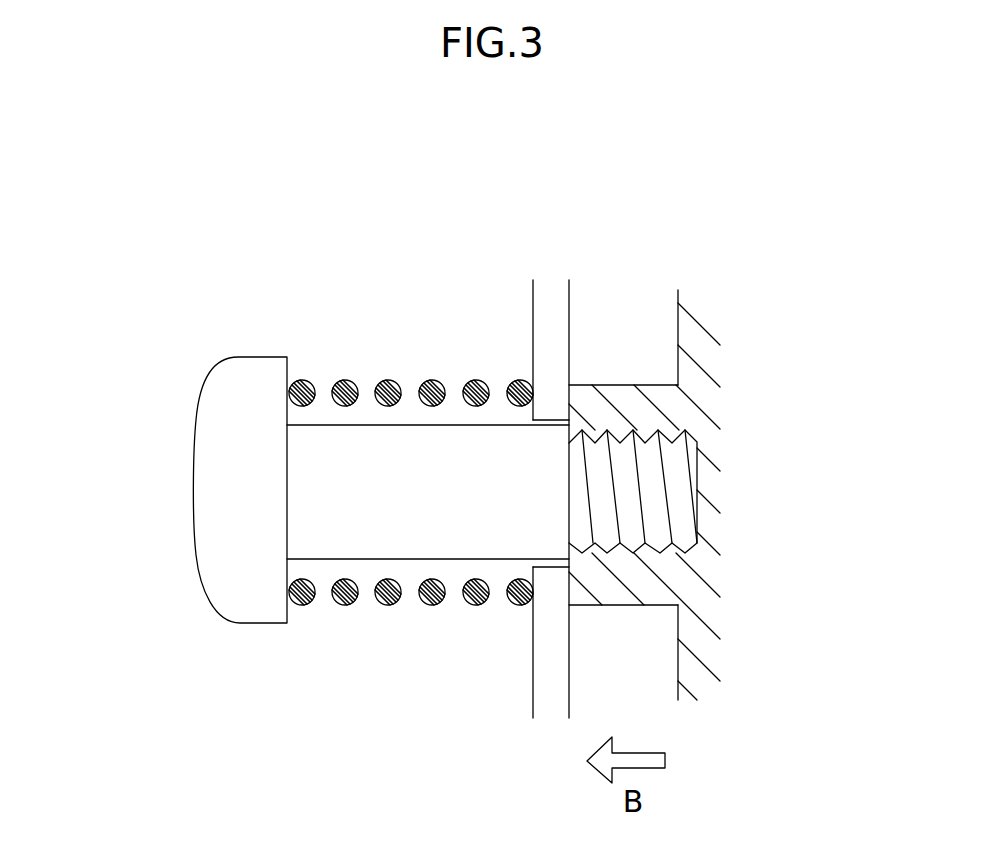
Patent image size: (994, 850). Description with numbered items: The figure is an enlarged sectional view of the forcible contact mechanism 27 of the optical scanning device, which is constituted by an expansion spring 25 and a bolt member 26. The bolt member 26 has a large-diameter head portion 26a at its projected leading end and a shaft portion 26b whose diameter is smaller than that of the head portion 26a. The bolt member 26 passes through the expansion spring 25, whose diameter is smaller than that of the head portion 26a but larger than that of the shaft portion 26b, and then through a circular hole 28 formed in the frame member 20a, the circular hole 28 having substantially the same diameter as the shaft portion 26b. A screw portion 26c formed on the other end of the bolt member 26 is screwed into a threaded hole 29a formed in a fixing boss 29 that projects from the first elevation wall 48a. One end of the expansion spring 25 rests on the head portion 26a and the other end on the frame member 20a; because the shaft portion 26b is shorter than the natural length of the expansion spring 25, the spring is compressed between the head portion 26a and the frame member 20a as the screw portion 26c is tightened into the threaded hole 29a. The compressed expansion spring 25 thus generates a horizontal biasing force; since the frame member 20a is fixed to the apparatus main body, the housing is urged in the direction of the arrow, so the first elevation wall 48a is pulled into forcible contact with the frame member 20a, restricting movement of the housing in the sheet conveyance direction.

The frame member 20a is at (547, 674).
The expansion spring 25 is at (340, 605).
The bolt member 26 is at (182, 390).
The head portion 26a is at (195, 558).
The shaft portion 26b is at (381, 447).
The screw portion 26c is at (653, 495).
The forcible contact mechanism 27 is at (358, 232).
The circular hole 28 is at (532, 419).
The fixing boss 29 is at (635, 385).
The threaded hole 29a is at (623, 553).
The first elevation wall 48a is at (715, 312).